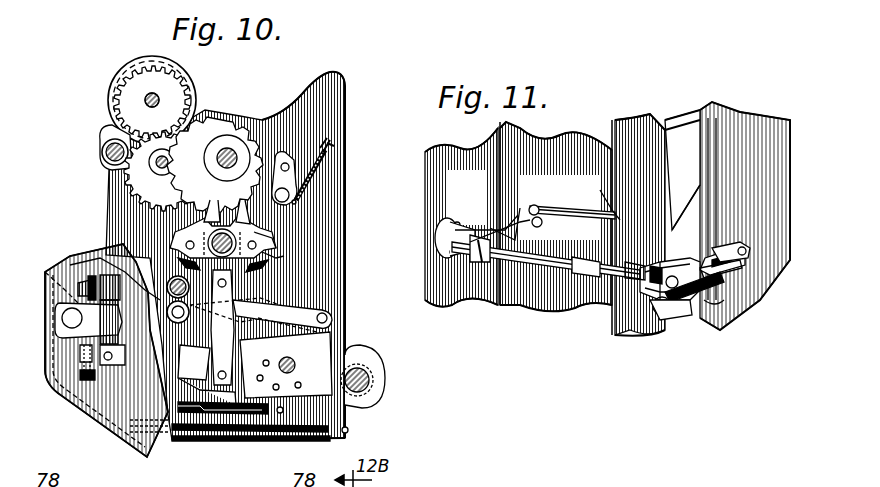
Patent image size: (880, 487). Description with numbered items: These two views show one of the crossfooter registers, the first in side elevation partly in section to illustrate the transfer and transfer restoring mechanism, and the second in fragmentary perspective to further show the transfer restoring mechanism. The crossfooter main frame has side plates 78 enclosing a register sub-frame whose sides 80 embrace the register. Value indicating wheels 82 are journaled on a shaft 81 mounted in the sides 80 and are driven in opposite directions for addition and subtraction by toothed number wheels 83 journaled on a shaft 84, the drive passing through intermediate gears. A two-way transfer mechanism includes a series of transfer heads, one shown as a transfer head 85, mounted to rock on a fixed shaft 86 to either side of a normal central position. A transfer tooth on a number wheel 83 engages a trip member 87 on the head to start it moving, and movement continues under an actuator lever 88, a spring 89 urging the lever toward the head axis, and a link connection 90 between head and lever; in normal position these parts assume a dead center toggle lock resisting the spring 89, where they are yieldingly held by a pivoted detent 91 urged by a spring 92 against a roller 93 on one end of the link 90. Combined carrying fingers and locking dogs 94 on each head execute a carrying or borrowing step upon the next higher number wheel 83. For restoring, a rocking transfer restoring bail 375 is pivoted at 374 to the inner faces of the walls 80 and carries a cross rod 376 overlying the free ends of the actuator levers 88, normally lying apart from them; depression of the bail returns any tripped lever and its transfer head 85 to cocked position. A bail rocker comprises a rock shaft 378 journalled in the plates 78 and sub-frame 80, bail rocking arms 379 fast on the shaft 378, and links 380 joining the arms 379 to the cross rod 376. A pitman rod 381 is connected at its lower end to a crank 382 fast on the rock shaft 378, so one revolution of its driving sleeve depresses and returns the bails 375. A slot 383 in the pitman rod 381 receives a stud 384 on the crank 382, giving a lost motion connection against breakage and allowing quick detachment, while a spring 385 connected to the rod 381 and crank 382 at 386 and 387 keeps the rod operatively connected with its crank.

In FIG. 10, the side plate 78 is at (72, 400).
In FIG. 11, the side plate 78 is at (755, 300).
In FIG. 10, the sub-frame side 80 is at (346, 250).
In FIG. 11, the sub-frame side 80 is at (495, 300).
In FIG. 10, the shaft 81 is at (160, 95).
In FIG. 10, the value indicating wheel 82 is at (128, 66).
In FIG. 10, the number wheel 83 is at (236, 120).
In FIG. 10, the shaft 84 is at (244, 140).
In FIG. 10, the transfer head 85 is at (266, 236).
In FIG. 10, the fixed shaft 86 is at (200, 232).
In FIG. 10, the trip member 87 is at (230, 172).
In FIG. 10, the actuator lever 88 is at (278, 336).
In FIG. 10, the spring 89 is at (298, 440).
In FIG. 10, the link connection 90 is at (236, 310).
In FIG. 10, the pivoted detent 91 is at (238, 434).
In FIG. 10, the spring 92 is at (185, 418).
In FIG. 10, the roller 93 is at (166, 432).
In FIG. 10, the carrying finger and locking dog 94 is at (270, 243).
In FIG. 10, the pivot 374 is at (326, 316).
In FIG. 10, the transfer restoring bail 375 is at (300, 300).
In FIG. 11, the transfer restoring bail 375 is at (600, 190).
In FIG. 10, the cross rod 376 is at (112, 268).
In FIG. 11, the cross rod 376 is at (546, 250).
In FIG. 10, the rock shaft 378 is at (62, 275).
In FIG. 11, the rock shaft 378 is at (548, 300).
In FIG. 10, the bail rocking arm 379 is at (172, 320).
In FIG. 11, the bail rocking arm 379 is at (500, 225).
In FIG. 10, the link 380 is at (145, 352).
In FIG. 11, the link 380 is at (518, 210).
In FIG. 11, the pitman rod 381 is at (714, 145).
In FIG. 10, the crank 382 is at (72, 318).
In FIG. 11, the crank 382 is at (730, 288).
In FIG. 11, the slot 383 is at (728, 238).
In FIG. 11, the stud 384 is at (748, 250).
In FIG. 11, the spring 385 is at (724, 300).
In FIG. 11, the spring connection 386 is at (742, 268).
In FIG. 11, the spring connection 387 is at (692, 318).